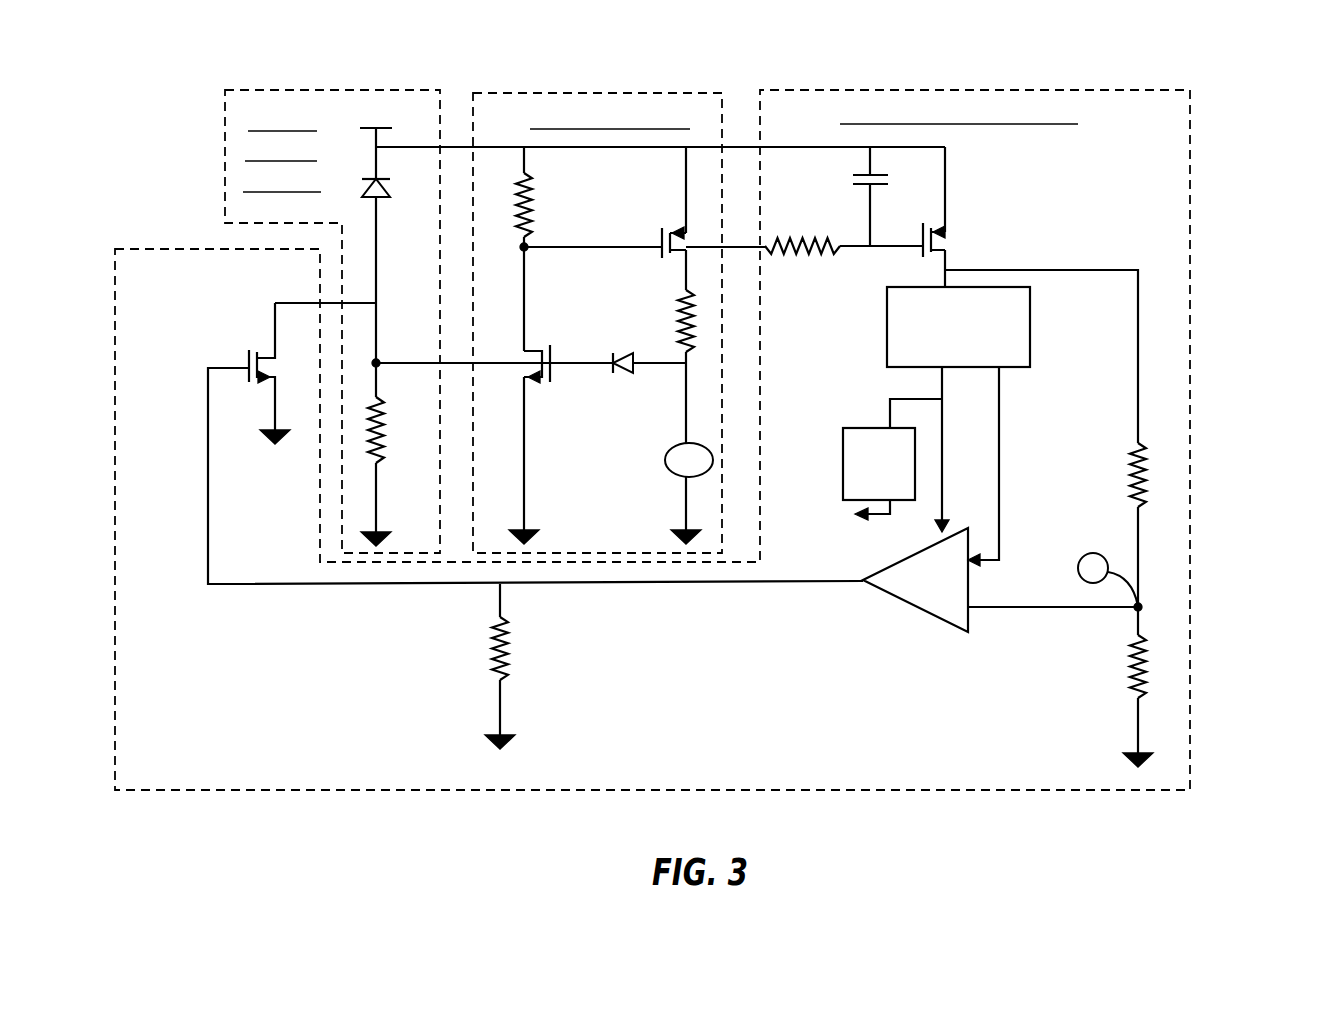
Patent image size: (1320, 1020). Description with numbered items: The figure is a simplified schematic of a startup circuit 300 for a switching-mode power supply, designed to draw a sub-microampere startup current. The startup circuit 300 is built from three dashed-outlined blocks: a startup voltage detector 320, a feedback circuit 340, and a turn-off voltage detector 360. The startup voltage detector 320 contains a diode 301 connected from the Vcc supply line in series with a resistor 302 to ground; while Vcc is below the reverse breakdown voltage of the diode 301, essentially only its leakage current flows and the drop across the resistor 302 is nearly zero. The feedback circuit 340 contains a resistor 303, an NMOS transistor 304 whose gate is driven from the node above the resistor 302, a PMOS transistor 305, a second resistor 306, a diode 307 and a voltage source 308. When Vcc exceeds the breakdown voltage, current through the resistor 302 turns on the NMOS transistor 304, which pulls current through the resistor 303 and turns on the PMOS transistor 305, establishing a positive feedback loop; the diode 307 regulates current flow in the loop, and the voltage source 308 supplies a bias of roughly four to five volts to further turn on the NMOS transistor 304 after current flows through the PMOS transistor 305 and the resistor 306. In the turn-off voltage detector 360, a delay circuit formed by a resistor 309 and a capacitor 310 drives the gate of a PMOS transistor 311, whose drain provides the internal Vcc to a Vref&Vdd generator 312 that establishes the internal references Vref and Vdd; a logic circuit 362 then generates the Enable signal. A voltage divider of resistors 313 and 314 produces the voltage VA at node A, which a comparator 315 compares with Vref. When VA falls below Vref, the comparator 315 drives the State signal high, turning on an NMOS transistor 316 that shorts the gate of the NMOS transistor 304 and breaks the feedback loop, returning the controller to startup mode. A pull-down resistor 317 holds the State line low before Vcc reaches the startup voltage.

The startup circuit 300 is at (1205, 61).
The diode 301 is at (385, 188).
The resistor 302 is at (392, 428).
The resistor 303 is at (535, 222).
The NMOS transistor 304 is at (557, 375).
The PMOS transistor 305 is at (655, 230).
The second resistor 306 is at (675, 328).
The diode 307 is at (618, 377).
The voltage source 308 is at (663, 453).
The resistor 309 is at (810, 255).
The capacitor 310 is at (850, 185).
The PMOS transistor 311 is at (952, 220).
The Vref&Vdd generator 312 is at (1033, 312).
The resistor 313 is at (1130, 468).
The resistor 314 is at (1130, 663).
The comparator 315 is at (947, 622).
The NMOS transistor 316 is at (265, 350).
The pull-down resistor 317 is at (482, 648).
The startup voltage detector 320 is at (423, 88).
The feedback circuit 340 is at (624, 90).
The turn-off voltage detector 360 is at (878, 89).
The logic circuit 362 is at (897, 482).